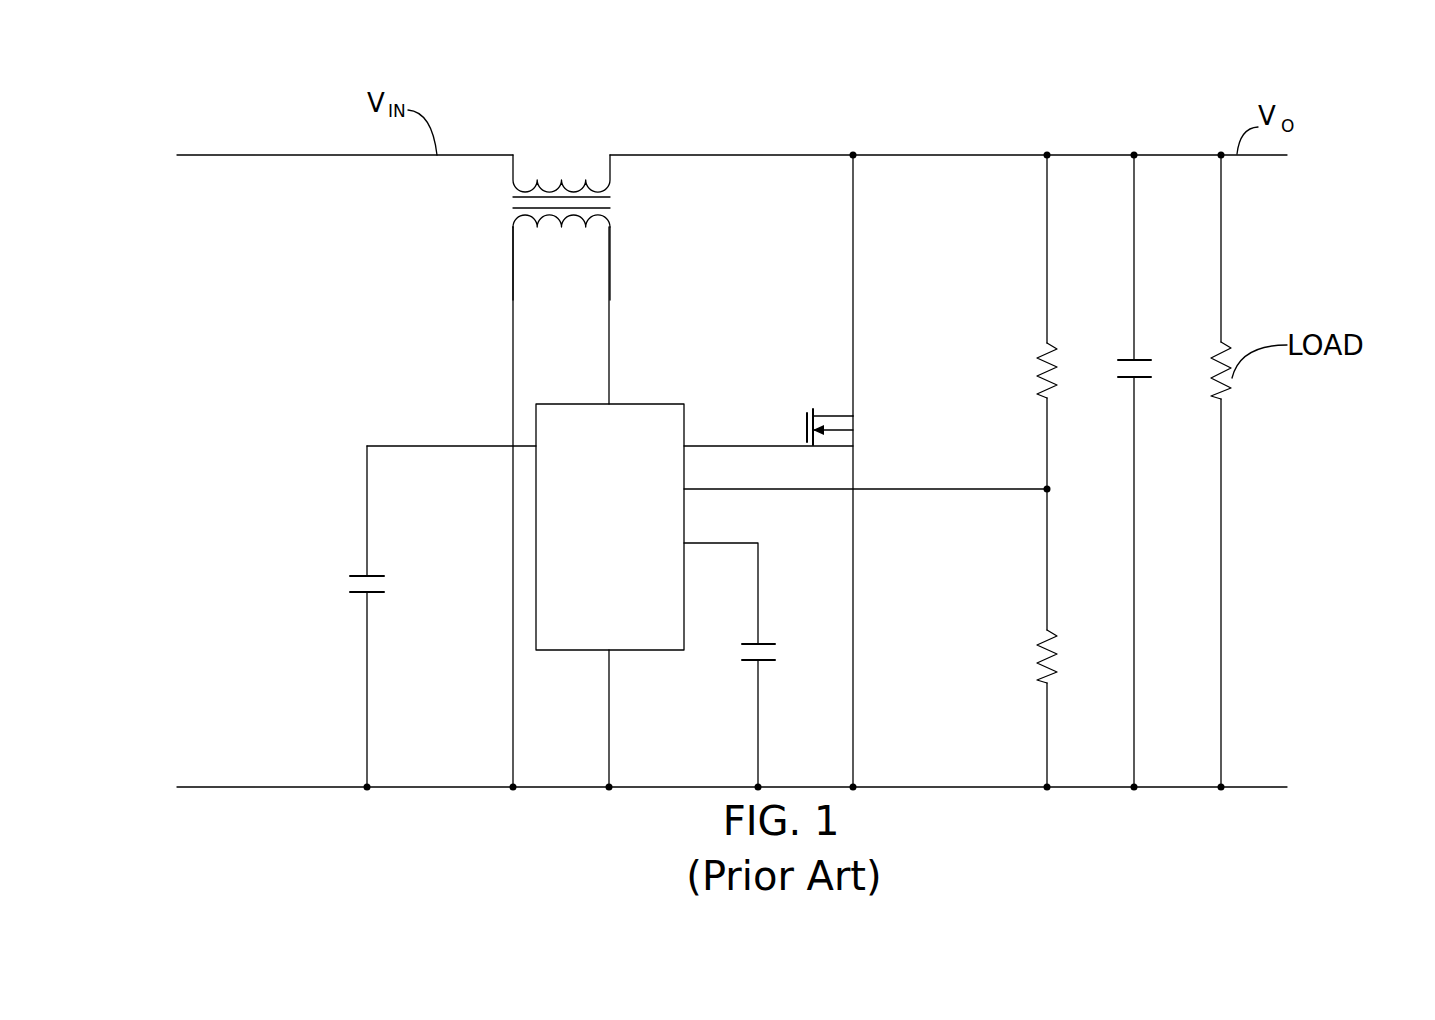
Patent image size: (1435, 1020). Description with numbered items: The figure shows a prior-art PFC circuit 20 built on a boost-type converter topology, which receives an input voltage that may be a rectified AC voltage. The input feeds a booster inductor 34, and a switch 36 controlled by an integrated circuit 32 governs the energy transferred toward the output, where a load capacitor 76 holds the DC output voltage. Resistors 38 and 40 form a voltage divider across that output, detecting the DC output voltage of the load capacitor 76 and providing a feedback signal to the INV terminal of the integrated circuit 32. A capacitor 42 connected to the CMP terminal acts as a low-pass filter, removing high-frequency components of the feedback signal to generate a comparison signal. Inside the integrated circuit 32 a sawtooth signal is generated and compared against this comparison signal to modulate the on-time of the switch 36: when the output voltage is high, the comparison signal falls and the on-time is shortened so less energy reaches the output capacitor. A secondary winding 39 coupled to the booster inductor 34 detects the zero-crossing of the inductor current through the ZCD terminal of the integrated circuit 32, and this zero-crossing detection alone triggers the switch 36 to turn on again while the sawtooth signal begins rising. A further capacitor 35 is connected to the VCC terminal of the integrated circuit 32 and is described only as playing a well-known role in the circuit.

The PFC circuit 20 is at (1074, 88).
The integrated circuit 32 is at (610, 582).
The booster inductor 34 is at (537, 168).
The capacitor 35 is at (358, 575).
The switch 36 is at (857, 423).
The resistor 38 is at (1037, 362).
The secondary winding 39 is at (557, 247).
The resistor 40 is at (1037, 648).
The capacitor 42 is at (770, 638).
The load capacitor 76 is at (1125, 353).